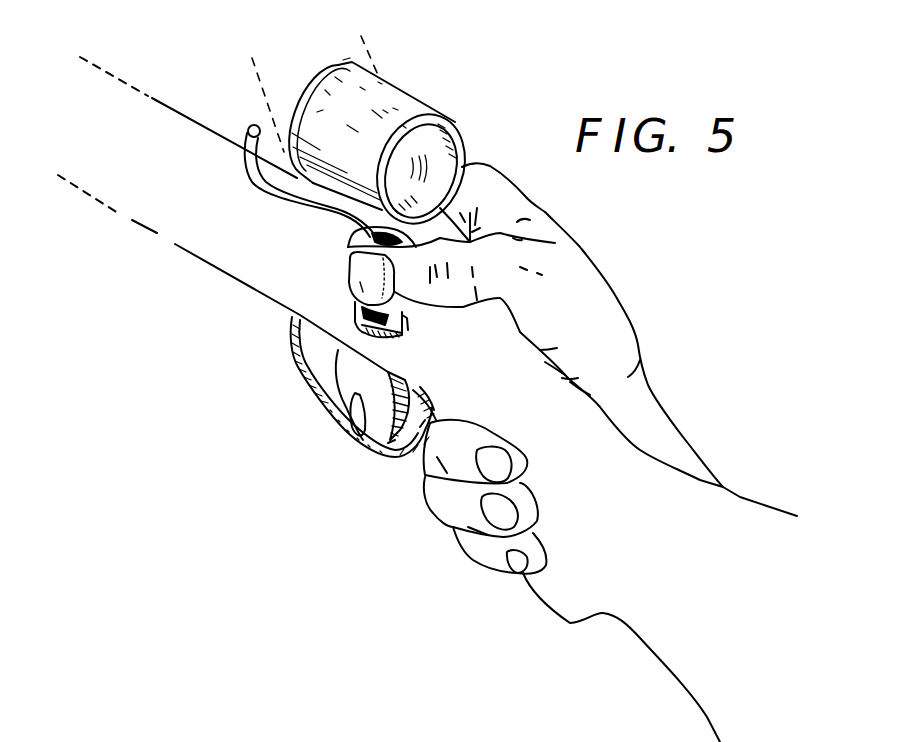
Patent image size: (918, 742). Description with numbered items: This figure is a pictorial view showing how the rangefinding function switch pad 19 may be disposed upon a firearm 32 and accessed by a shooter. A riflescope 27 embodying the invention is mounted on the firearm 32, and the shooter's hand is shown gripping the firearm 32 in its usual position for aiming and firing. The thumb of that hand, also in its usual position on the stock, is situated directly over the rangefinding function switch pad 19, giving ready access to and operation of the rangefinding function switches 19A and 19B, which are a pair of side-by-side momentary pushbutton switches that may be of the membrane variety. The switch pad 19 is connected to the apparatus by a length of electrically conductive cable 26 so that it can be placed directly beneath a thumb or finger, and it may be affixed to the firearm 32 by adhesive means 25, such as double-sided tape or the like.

The rangefinding function switch pad 19 is at (340, 239).
The rangefinding function switch 19A is at (348, 254).
The rangefinding function switch 19B is at (403, 325).
The adhesive means 25 is at (400, 350).
The strap 26 is at (246, 157).
The riflescope 27 is at (400, 65).
The firearm 32 is at (144, 237).